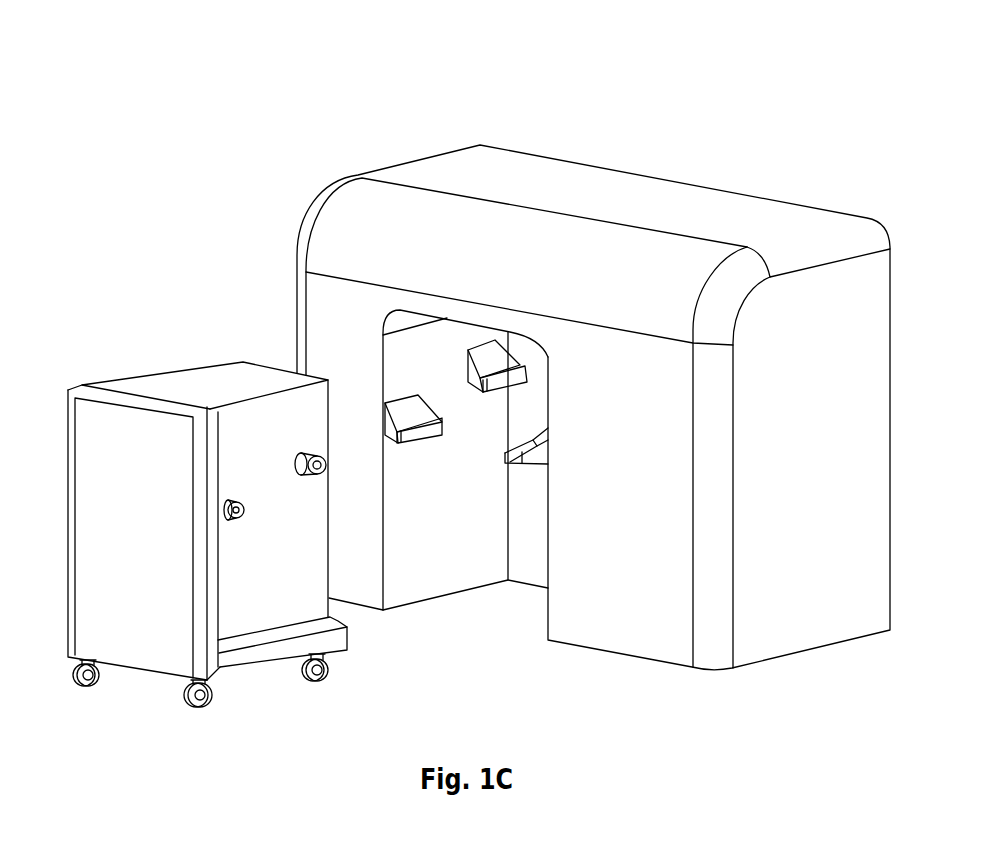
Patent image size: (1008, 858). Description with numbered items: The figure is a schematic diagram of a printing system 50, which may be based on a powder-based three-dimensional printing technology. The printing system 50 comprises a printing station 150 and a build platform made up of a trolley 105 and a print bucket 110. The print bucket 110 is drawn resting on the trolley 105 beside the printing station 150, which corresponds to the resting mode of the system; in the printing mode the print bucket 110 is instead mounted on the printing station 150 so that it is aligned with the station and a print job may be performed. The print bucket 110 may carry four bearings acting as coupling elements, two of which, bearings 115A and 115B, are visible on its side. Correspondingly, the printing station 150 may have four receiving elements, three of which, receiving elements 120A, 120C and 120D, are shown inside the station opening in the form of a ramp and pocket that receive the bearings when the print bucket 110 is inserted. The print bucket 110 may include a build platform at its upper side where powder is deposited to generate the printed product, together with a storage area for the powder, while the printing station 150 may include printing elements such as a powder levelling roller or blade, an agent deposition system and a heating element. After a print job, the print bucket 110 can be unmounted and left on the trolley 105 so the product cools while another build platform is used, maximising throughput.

The printing system 50 is at (312, 114).
The trolley 105 is at (86, 474).
The print bucket 110 is at (213, 390).
The bearing 115A is at (231, 498).
The bearing 115B is at (314, 476).
The receiving element 120A is at (543, 450).
The receiving element 120C is at (432, 432).
The receiving element 120D is at (505, 390).
The printing station 150 is at (338, 233).